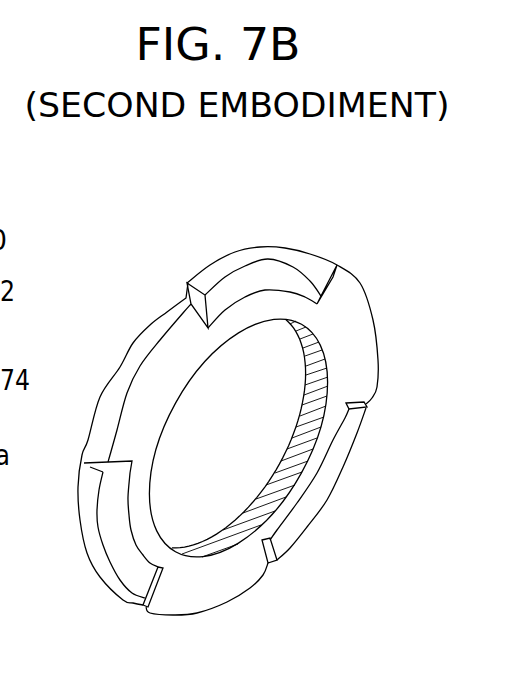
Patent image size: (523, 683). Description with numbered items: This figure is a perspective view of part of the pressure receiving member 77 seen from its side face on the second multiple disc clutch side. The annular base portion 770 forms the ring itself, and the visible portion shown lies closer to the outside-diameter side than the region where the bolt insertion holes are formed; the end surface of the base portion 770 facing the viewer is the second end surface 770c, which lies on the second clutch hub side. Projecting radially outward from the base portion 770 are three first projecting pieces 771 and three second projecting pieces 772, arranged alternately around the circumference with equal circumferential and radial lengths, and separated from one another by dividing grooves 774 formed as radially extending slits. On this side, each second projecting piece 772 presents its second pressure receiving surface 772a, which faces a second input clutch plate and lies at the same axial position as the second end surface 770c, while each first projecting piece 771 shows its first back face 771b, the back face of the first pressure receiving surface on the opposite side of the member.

The pressure receiving member 77 is at (337, 522).
The base portion 770 is at (317, 360).
The second end surface 770c is at (141, 516).
The first projecting piece 771 is at (220, 268).
The first back face 771b is at (273, 270).
The second projecting piece 772 is at (163, 333).
The second pressure receiving surface 772a is at (147, 393).
The dividing groove 774 is at (186, 292).